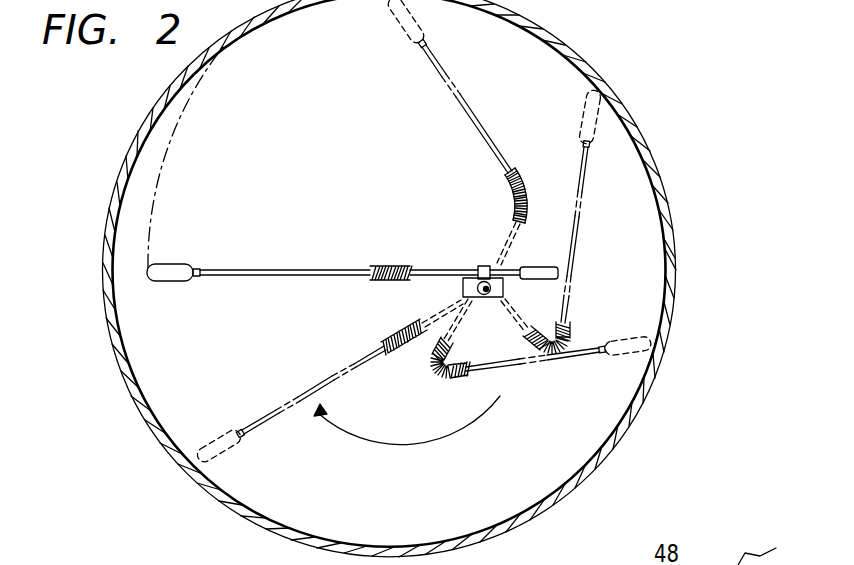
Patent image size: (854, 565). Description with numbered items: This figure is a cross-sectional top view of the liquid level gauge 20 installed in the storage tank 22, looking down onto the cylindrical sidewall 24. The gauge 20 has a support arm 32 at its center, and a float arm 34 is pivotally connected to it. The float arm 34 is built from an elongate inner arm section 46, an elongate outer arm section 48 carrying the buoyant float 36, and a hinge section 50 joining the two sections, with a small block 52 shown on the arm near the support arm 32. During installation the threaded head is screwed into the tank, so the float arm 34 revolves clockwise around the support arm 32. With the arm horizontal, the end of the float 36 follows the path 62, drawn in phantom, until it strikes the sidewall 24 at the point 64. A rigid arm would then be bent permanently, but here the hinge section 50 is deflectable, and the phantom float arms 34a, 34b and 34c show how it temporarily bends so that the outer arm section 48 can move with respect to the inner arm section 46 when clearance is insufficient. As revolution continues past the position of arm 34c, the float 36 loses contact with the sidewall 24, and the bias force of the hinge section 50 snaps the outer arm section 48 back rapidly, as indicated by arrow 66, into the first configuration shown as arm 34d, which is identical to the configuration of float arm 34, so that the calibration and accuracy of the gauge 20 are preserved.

The liquid level gauge 20 is at (346, 174).
The storage tank 22 is at (609, 49).
The cylindrical sidewall 24 is at (678, 278).
The support arm 32 is at (487, 298).
The float arm 34 is at (357, 268).
The float arm 34a is at (442, 97).
The float arm 34b is at (569, 163).
The float arm 34c is at (527, 376).
The float arm 34d is at (291, 394).
The buoyant float 36 is at (176, 283).
The inner arm section 46 is at (481, 266).
The outer arm section 48 is at (283, 277).
The hinge section 50 is at (386, 281).
The stop block 52 is at (541, 267).
The path 62 is at (162, 170).
The point 64 is at (237, 40).
The arrow 66 is at (416, 447).